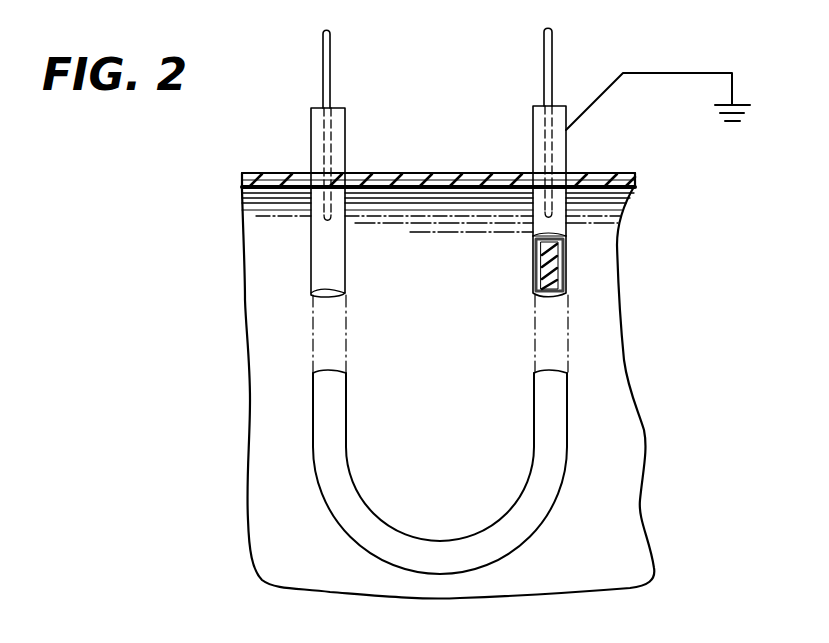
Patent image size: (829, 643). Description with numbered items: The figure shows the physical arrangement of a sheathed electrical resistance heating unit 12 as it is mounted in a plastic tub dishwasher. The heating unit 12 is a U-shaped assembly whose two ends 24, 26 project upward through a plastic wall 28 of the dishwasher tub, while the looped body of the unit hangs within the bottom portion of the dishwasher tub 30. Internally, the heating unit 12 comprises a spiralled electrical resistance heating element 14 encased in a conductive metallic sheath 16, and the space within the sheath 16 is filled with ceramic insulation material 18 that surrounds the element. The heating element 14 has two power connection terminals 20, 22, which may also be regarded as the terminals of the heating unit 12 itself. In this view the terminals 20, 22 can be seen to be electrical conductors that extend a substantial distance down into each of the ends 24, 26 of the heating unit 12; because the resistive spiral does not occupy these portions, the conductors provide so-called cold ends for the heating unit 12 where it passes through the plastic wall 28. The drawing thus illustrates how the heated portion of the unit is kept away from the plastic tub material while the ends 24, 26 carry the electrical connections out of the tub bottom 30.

The sheathed electrical resistance heating unit 12 is at (383, 460).
The spiralled electrical resistance heating element 14 is at (566, 285).
The conductive metallic sheath 16 is at (540, 233).
The ceramic insulation material 18 is at (541, 280).
The power connection terminal 20 is at (330, 67).
The power connection terminal 22 is at (544, 50).
The end of the heating unit 24 is at (311, 130).
The end of the heating unit 26 is at (533, 140).
The plastic wall 28 is at (388, 173).
The bottom portion of the dishwasher tub 30 is at (612, 377).